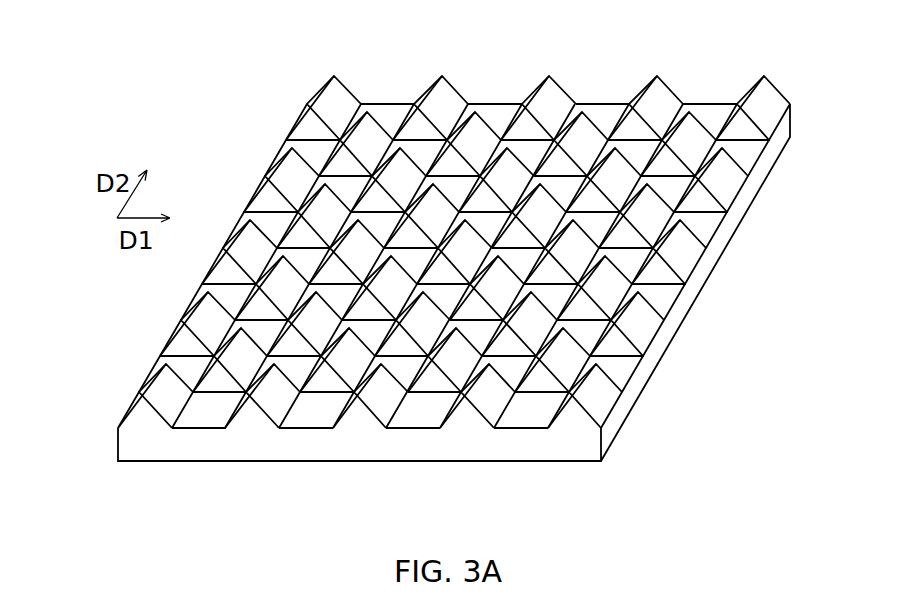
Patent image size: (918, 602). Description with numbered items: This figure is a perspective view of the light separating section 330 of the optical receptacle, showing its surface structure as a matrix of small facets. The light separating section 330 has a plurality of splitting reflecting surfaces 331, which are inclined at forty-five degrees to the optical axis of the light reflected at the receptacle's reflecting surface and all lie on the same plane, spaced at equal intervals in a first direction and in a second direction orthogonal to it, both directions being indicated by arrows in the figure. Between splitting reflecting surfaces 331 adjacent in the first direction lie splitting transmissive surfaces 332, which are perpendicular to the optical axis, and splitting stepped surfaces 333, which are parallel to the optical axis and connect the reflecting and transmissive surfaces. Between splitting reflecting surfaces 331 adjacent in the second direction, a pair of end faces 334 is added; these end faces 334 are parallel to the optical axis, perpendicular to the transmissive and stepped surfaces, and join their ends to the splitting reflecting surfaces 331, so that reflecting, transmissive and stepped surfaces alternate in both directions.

The light separating section 330 is at (413, 258).
The splitting reflecting surfaces 331 is at (518, 416).
The splitting transmissive surfaces 332 is at (703, 265).
The splitting stepped surfaces 333 is at (142, 392).
The end faces 334 is at (637, 133).